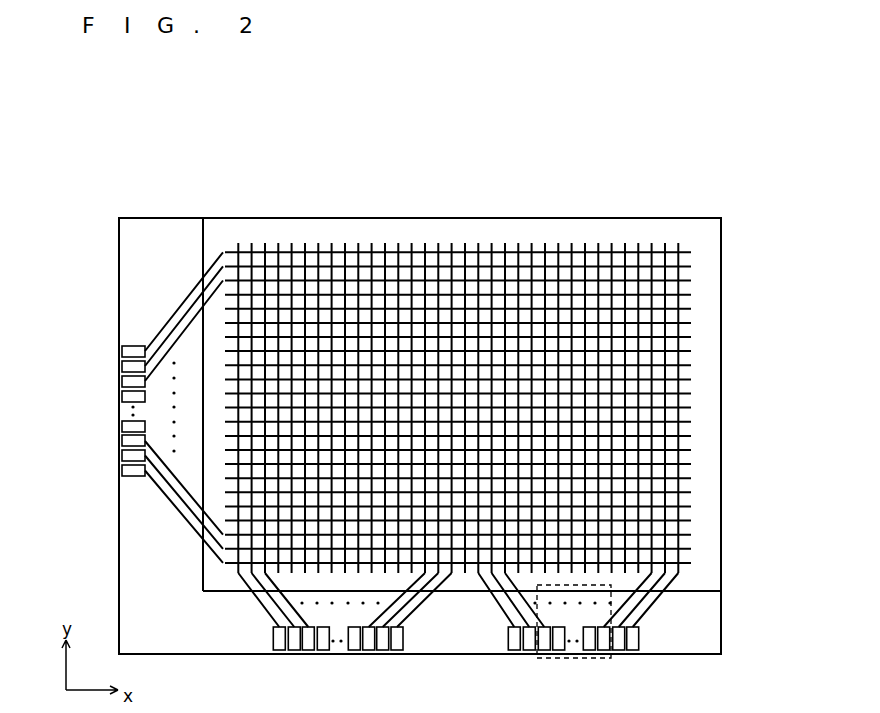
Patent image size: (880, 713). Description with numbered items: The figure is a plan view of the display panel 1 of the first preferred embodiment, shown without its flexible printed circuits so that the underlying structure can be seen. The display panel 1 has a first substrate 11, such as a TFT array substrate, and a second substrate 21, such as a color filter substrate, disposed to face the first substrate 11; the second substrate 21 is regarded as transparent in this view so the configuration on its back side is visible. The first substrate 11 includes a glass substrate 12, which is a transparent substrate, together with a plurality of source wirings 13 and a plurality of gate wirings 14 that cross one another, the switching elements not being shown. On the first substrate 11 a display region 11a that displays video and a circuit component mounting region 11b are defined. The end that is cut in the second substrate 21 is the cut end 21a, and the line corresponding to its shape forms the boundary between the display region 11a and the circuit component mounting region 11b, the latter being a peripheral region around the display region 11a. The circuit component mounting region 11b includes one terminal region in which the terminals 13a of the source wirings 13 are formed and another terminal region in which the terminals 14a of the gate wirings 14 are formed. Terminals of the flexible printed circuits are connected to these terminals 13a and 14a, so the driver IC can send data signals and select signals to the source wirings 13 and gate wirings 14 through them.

The display panel 1 is at (750, 343).
The first substrate 11 is at (247, 177).
The display region 11a is at (227, 228).
The circuit component mounting region 11b is at (174, 228).
The glass substrate 12 is at (712, 625).
The source wirings 13 is at (420, 605).
The terminals of the source wirings 13a is at (514, 648).
The gate wirings 14 is at (685, 563).
The terminals of the gate wirings 14a is at (122, 352).
The second substrate 21 is at (212, 237).
The cut end 21a is at (198, 265).